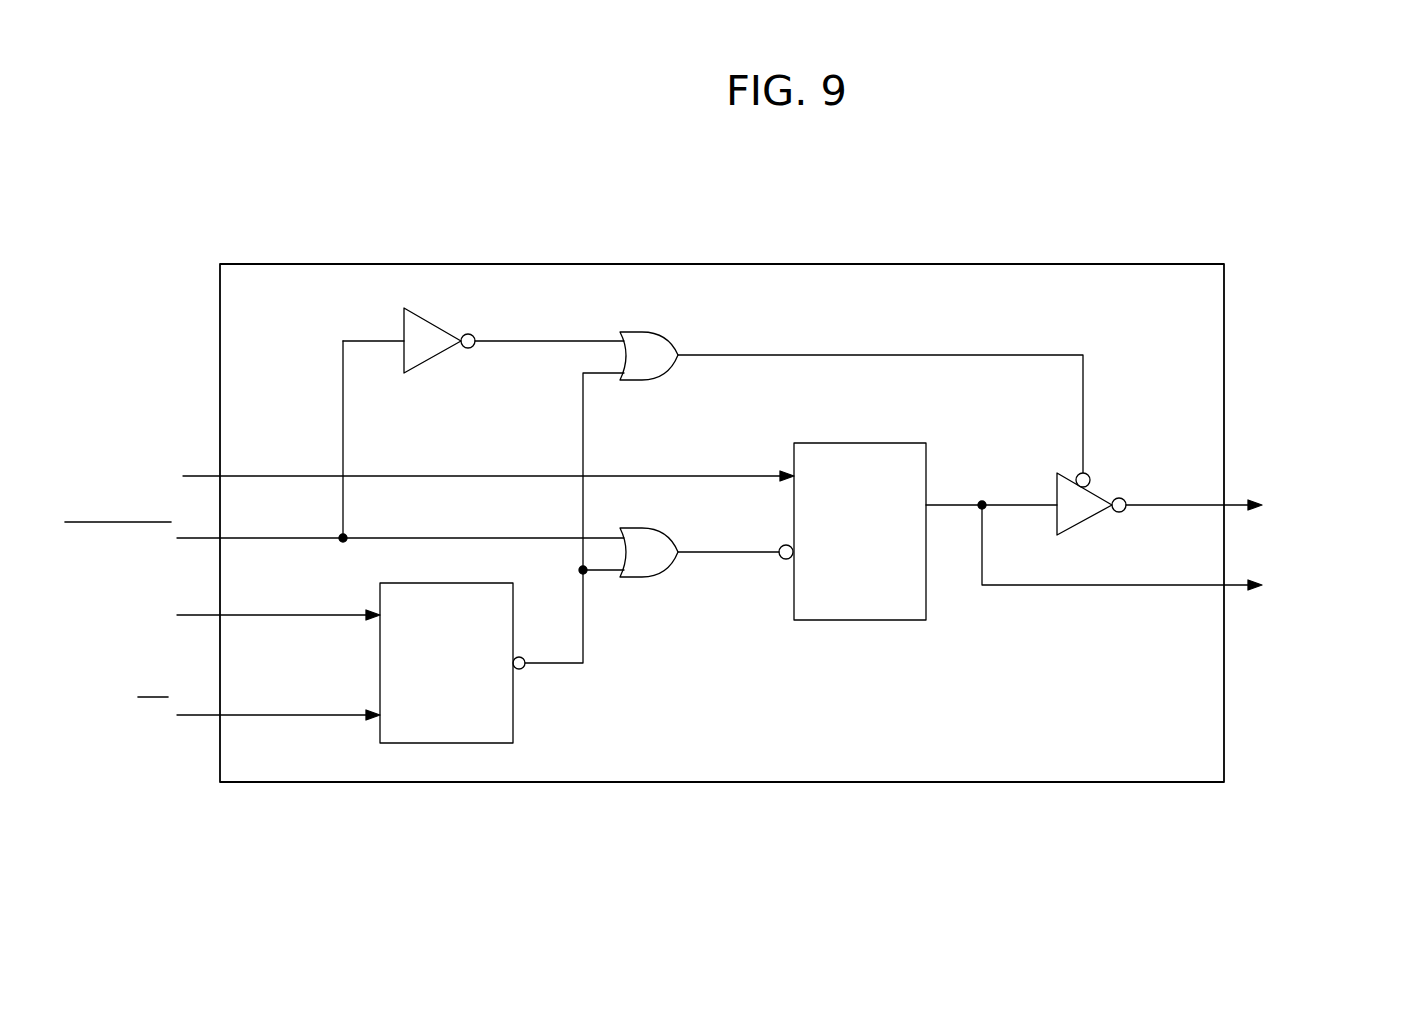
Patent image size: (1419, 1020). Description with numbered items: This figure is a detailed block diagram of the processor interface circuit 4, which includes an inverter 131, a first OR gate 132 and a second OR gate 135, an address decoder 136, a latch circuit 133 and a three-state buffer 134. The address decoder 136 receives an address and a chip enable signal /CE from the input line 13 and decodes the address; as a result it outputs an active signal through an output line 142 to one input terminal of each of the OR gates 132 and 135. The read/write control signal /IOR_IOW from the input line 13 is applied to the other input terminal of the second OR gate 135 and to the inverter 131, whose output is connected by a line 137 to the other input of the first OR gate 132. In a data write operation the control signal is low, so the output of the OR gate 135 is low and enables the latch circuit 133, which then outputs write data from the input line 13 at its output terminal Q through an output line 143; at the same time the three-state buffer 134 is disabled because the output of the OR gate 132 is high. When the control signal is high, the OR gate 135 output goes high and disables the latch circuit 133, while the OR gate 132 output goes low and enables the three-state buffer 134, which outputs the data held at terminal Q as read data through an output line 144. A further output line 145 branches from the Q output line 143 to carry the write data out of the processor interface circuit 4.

The processor interface circuit 4 is at (948, 263).
The input line 13 is at (244, 476).
The inverter 131 is at (430, 323).
The first OR gate 132 is at (668, 346).
The latch circuit 133 is at (866, 443).
The 3-state buffer 134 is at (1075, 524).
The second OR gate 135 is at (668, 543).
The address decoder 136 is at (455, 583).
The OR gate output line 137 is at (805, 355).
The output line 142 is at (583, 627).
The output line 143 is at (950, 505).
The output line 144 is at (1145, 505).
The write data output 145 is at (1143, 585).